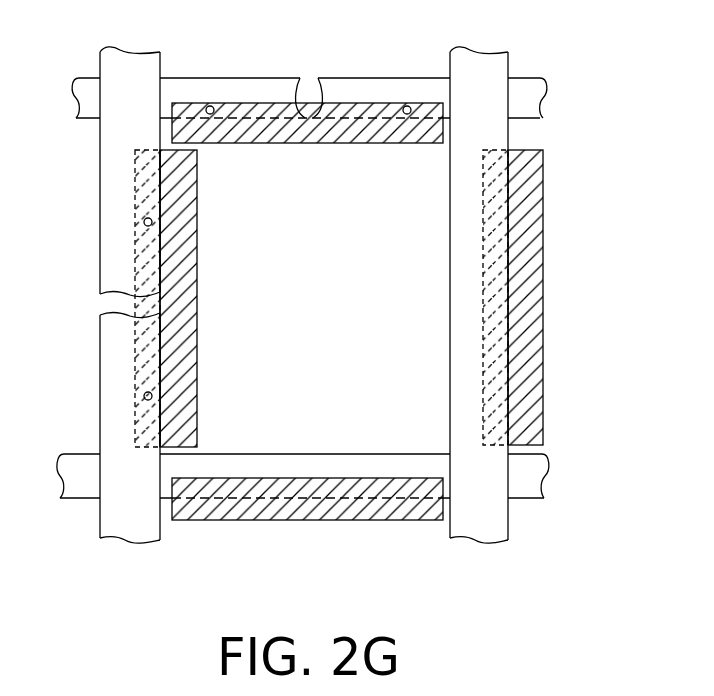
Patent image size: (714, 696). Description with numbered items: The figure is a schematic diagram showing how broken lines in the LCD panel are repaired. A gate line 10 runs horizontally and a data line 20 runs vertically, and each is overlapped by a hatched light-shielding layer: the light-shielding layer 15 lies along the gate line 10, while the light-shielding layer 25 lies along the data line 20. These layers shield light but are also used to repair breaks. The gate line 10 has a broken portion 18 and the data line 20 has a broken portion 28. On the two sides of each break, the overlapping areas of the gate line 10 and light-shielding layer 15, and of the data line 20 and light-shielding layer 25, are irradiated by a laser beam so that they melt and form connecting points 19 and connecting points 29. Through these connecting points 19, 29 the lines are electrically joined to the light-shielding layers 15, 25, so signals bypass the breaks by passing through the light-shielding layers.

The gate line 10 is at (533, 103).
The light-shielding layer 15 is at (259, 116).
The broken portion 18 is at (311, 79).
The connecting point 19 is at (213, 106).
The data line 20 is at (110, 68).
The light-shielding layer 25 is at (197, 305).
The broken portion 28 is at (108, 303).
The connecting point 29 is at (152, 221).